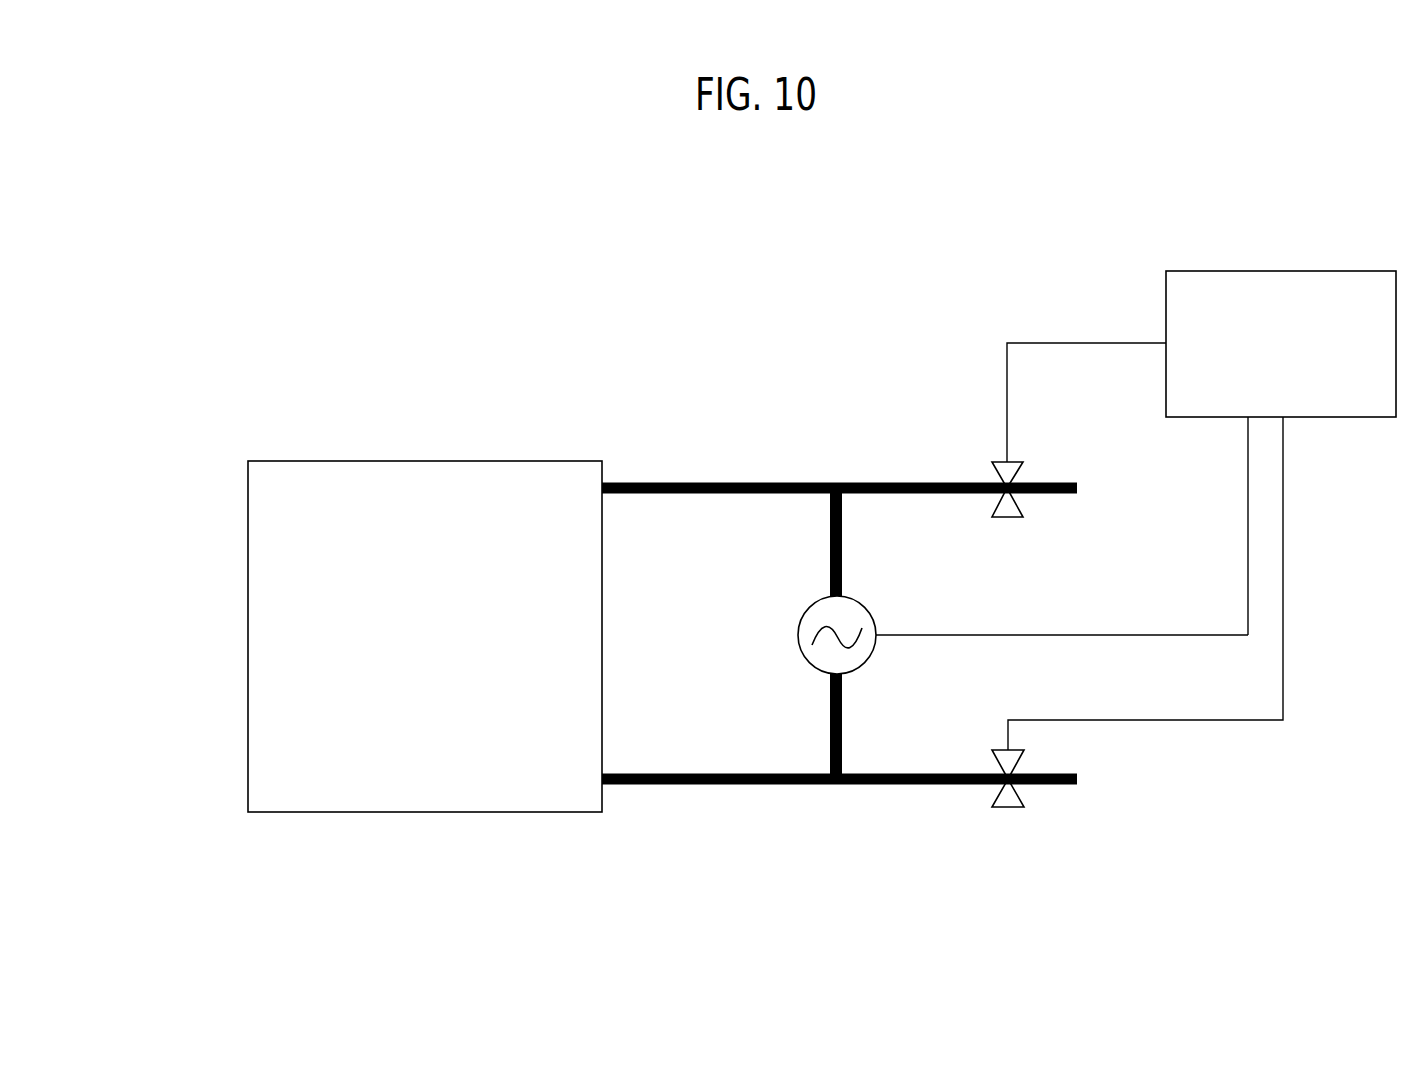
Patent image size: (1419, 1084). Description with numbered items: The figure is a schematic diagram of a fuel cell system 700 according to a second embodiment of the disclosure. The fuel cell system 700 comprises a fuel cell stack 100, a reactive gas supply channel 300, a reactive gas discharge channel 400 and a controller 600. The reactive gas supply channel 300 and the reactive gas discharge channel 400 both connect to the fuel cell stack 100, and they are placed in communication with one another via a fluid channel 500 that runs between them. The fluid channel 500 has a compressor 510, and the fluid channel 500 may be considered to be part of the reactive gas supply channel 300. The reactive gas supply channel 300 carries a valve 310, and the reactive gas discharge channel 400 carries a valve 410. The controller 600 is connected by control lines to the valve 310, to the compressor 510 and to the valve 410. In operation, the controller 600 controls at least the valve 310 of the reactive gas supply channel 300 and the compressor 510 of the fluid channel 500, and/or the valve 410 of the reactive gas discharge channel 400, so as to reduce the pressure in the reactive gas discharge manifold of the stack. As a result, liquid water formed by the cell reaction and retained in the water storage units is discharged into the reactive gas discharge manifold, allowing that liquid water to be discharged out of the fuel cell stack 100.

The fuel cell stack 100 is at (267, 537).
The reactive gas supply channel 300 is at (742, 483).
The valve 310 is at (1002, 466).
The reactive gas discharge channel 400 is at (777, 782).
The valve 410 is at (1008, 797).
The fluid channel 500 is at (845, 747).
The compressor 510 is at (863, 613).
The controller 600 is at (1318, 302).
The fuel cell system 700 is at (200, 642).